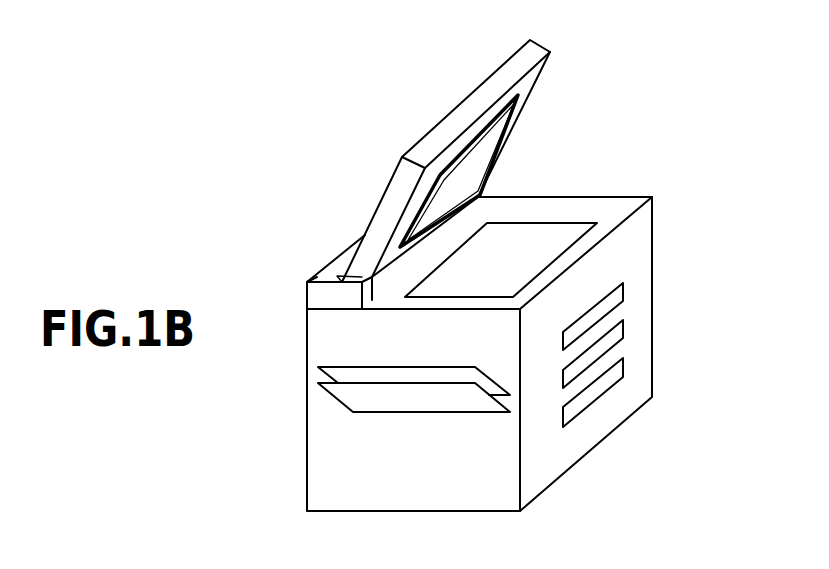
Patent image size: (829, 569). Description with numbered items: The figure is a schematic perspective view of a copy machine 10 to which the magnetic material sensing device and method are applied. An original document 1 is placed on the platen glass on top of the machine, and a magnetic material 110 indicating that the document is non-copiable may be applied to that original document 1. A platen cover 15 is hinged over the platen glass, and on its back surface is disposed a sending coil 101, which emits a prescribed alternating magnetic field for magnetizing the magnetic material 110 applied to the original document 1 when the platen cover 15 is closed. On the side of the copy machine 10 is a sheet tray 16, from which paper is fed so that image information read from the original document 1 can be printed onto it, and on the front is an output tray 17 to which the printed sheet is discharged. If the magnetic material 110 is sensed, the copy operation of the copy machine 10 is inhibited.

The original document 1 is at (557, 222).
The copy machine 10 is at (653, 255).
The platen cover 15 is at (543, 45).
The sheet tray 16 is at (623, 327).
The output tray 17 is at (357, 365).
The sending coil 101 is at (508, 120).
The magnetic material 110 is at (475, 275).